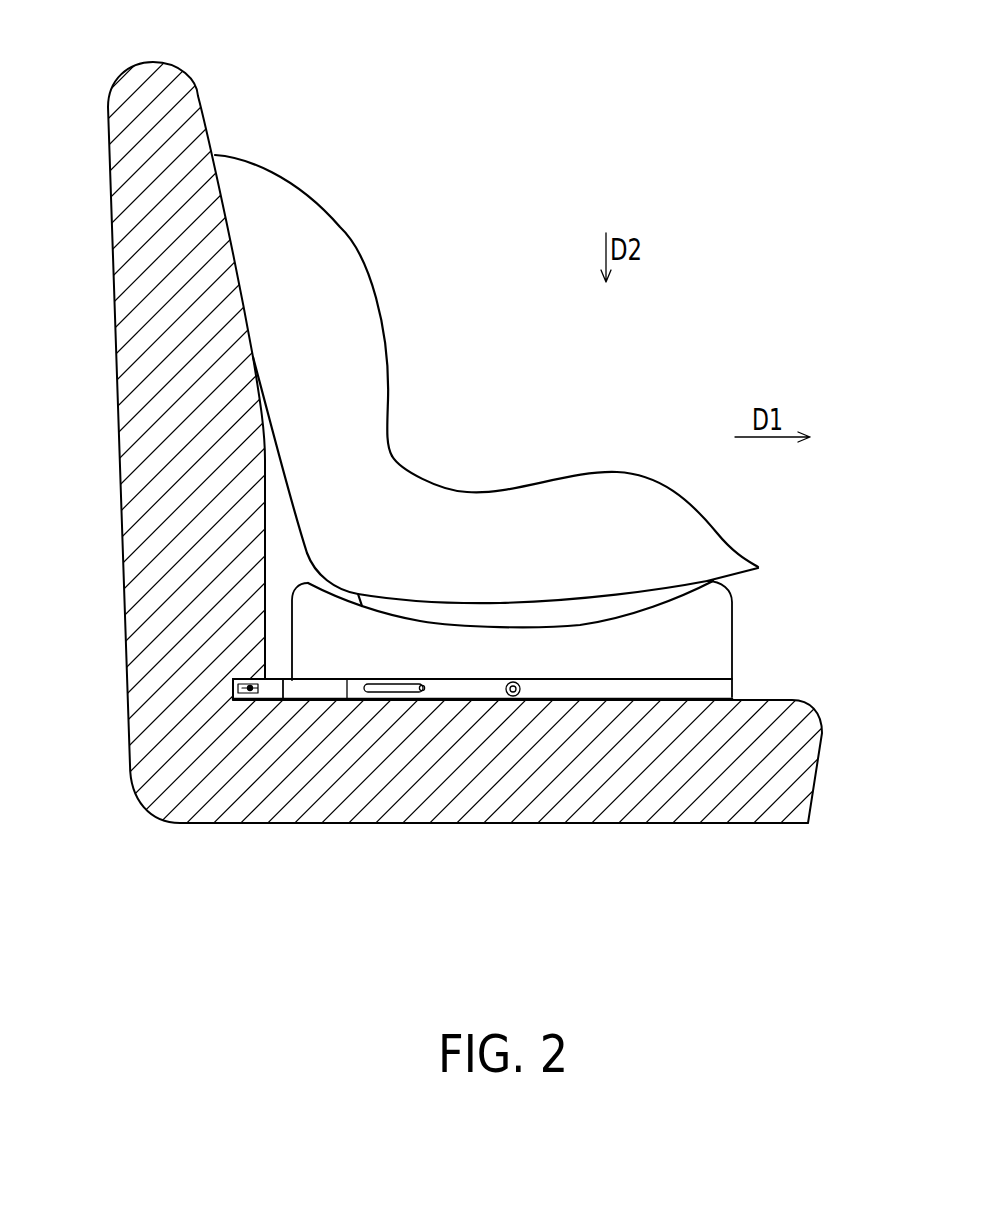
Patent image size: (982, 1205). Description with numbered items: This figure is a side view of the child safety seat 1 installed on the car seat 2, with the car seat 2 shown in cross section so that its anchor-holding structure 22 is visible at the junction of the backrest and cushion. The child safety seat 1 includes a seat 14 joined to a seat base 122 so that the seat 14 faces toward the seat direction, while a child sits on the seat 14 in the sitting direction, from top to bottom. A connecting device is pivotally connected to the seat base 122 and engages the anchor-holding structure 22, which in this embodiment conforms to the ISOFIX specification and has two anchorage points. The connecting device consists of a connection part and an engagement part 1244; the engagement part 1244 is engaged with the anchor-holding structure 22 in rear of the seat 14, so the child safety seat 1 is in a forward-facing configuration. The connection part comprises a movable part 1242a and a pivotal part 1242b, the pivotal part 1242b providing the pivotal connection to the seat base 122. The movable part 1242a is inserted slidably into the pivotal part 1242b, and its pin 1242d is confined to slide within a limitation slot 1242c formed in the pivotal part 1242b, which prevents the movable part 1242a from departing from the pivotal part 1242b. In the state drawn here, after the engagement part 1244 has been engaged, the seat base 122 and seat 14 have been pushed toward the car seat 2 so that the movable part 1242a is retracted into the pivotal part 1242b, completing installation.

The child safety seat 1 is at (489, 494).
The car seat 2 is at (142, 83).
The seat 14 is at (345, 248).
The anchor-holding structure 22 is at (232, 675).
The seat base 122 is at (718, 637).
The engagement part 1244 is at (270, 690).
The movable part 1242a is at (320, 690).
The pivotal part 1242b is at (485, 694).
The limitation slot 1242c is at (378, 694).
The pin 1242d is at (422, 694).